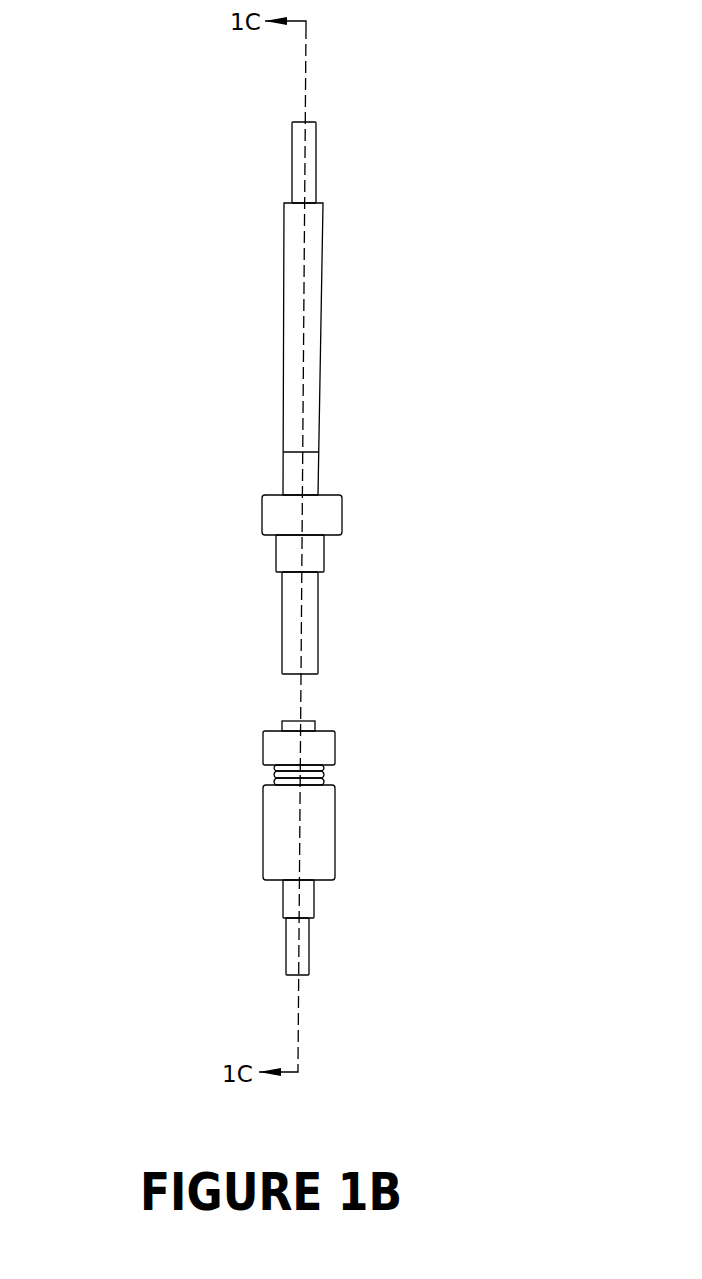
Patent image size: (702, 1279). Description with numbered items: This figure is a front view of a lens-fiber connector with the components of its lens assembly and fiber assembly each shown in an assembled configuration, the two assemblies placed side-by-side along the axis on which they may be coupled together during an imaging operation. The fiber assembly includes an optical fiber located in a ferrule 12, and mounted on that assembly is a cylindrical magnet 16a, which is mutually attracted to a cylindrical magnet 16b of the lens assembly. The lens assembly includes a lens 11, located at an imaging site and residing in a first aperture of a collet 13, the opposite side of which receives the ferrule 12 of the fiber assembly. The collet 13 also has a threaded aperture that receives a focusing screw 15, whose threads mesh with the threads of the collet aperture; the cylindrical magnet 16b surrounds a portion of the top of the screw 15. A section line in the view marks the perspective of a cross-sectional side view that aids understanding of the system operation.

The lens 11 is at (314, 947).
The ferrule 12 is at (319, 296).
The collet 13 is at (345, 827).
The focusing screw 15 is at (261, 773).
The cylindrical magnet 16a is at (349, 507).
The cylindrical magnet 16b is at (345, 744).